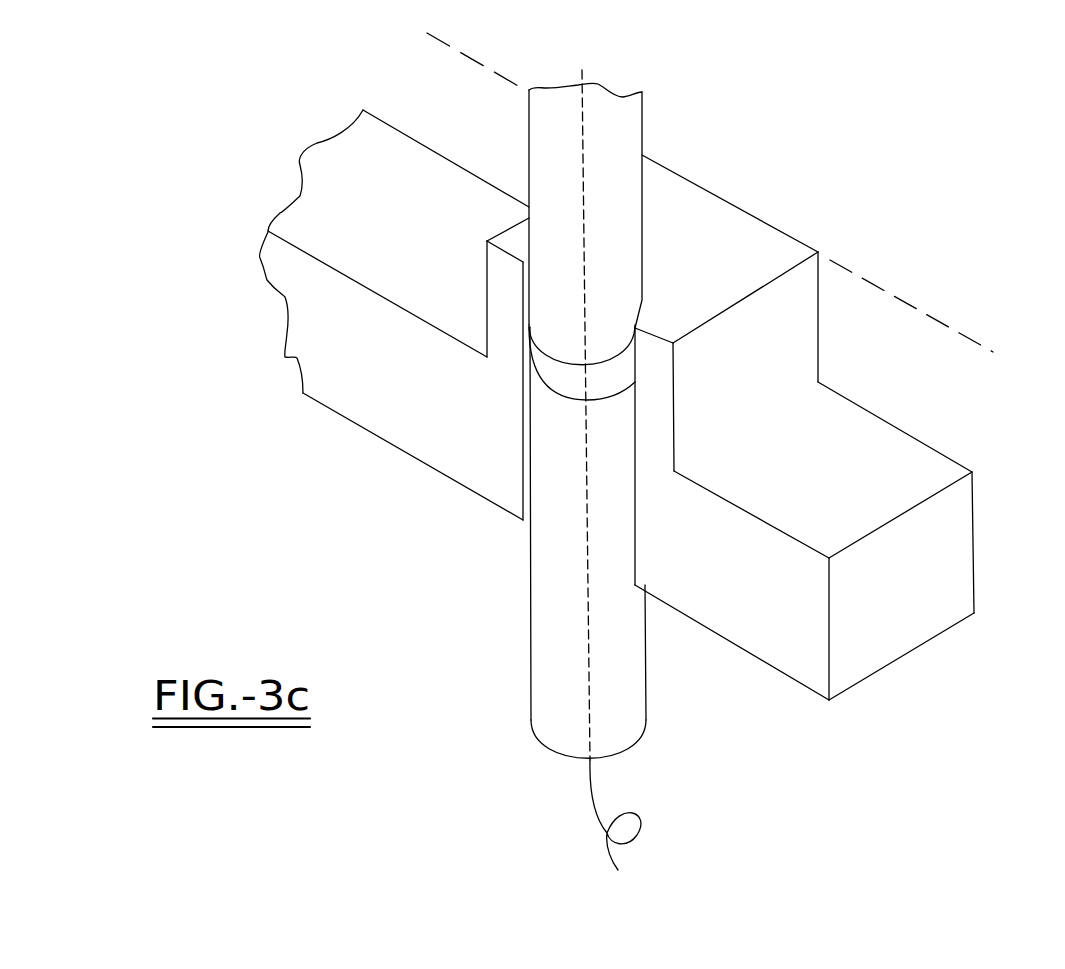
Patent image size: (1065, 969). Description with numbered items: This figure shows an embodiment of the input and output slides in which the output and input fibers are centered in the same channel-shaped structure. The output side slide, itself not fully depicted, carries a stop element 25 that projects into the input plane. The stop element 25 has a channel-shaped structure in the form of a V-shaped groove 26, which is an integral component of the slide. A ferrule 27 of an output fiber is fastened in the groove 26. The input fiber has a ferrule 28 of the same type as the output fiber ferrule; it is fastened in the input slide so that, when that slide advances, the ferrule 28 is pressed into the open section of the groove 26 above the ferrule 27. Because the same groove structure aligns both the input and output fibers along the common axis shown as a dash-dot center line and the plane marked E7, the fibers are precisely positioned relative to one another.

The stop element 25 is at (780, 332).
The V-shaped groove 26 is at (527, 370).
The ferrule 27 is at (532, 568).
The ferrule 28 is at (635, 123).
The reference axis line E7 is at (955, 328).